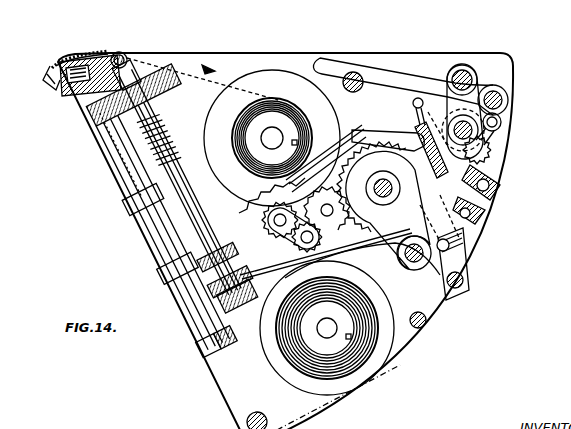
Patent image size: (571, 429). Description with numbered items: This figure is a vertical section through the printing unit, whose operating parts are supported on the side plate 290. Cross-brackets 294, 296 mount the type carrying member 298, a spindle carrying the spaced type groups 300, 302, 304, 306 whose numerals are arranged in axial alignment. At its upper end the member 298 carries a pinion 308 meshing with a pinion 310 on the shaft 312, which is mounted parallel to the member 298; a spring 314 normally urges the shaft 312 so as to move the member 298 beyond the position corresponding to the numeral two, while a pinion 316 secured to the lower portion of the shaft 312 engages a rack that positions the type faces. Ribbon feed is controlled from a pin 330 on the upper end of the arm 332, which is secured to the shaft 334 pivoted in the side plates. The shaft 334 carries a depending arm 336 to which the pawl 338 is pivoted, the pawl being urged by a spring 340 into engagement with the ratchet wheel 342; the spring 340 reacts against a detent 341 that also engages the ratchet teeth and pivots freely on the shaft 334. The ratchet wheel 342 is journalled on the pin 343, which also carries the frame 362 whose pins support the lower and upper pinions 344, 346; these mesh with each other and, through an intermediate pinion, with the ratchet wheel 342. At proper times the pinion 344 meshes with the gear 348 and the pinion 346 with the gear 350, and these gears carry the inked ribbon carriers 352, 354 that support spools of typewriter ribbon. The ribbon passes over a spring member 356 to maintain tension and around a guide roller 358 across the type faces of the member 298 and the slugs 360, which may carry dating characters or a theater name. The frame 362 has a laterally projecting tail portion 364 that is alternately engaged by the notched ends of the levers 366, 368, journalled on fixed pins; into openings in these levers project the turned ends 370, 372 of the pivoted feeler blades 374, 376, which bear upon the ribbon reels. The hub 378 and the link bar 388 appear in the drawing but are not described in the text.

The side plate 290 is at (259, 53).
The cross-bracket 294 is at (129, 87).
The cross-bracket 296 is at (236, 302).
The type carrying member 298 is at (147, 240).
The type group 300 is at (99, 166).
The type group 302 is at (132, 204).
The type group 304 is at (163, 275).
The type group 306 is at (206, 347).
The pinion 308 is at (90, 113).
The pinion 310 is at (122, 64).
The shaft 312 is at (186, 179).
The spring 314 is at (164, 137).
The pinion 316 is at (215, 271).
The pin 330 is at (465, 68).
The arm 332 is at (496, 90).
The shaft 334 is at (463, 120).
The depending arm 336 is at (490, 155).
The pawl 338 is at (472, 220).
The spring 340 is at (495, 180).
The detent 341 is at (500, 125).
The ratchet wheel 342 is at (400, 257).
The pin 343 is at (335, 209).
The lower pinion 344 is at (289, 248).
The upper pinion 346 is at (273, 236).
The gear 348 is at (331, 265).
The gear 350 is at (254, 198).
The inked ribbon carrier 352 is at (348, 320).
The inked ribbon carrier 354 is at (287, 120).
The spring member 356 is at (106, 53).
The guide roller 358 is at (257, 412).
The slug 360 is at (48, 84).
The frame 362 is at (345, 181).
The tail portion 364 is at (489, 190).
The lever 366 is at (486, 207).
The lever 368 is at (438, 145).
The turned end 370 is at (455, 240).
The turned end 372 is at (350, 143).
The feeler blade 374 is at (380, 268).
The feeler blade 376 is at (333, 148).
The hub 378 is at (391, 183).
The link bar 388 is at (378, 68).